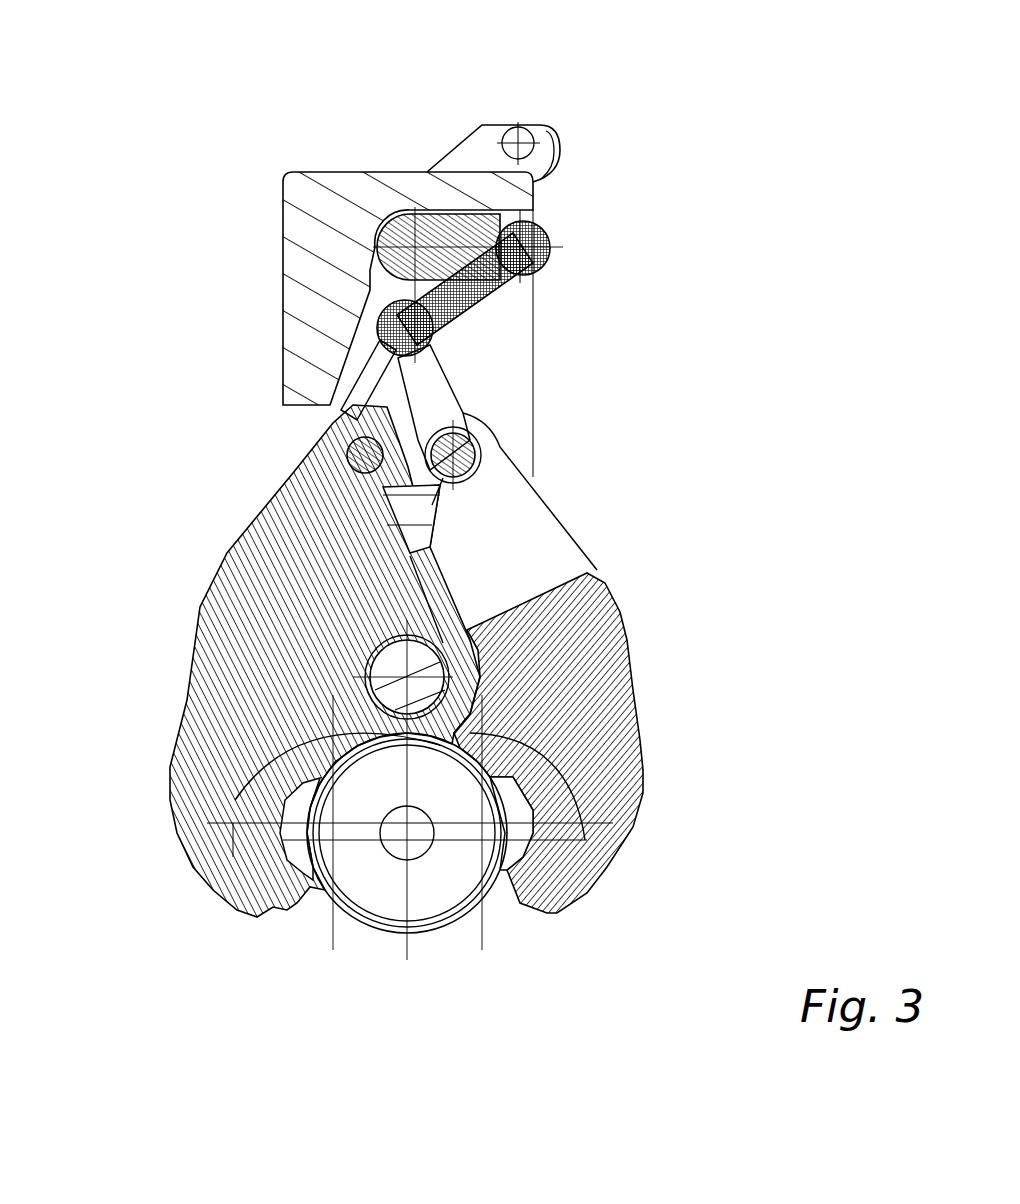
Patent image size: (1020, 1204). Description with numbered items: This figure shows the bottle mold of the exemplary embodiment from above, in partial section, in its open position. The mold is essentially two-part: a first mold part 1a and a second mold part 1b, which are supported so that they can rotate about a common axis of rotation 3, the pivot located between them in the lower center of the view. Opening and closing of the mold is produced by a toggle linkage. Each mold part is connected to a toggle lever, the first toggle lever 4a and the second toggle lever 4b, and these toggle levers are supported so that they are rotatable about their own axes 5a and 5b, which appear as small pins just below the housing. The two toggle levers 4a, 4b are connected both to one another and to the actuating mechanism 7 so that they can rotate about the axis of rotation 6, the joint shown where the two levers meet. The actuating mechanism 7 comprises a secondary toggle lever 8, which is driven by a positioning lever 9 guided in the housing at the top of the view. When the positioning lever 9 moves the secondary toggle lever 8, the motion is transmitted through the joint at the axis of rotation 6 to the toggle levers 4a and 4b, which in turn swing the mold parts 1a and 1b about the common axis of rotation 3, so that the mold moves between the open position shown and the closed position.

The first mold part 1a is at (272, 857).
The second mold part 1b is at (538, 858).
The common axis of rotation 3 is at (400, 675).
The toggle lever 4a is at (375, 393).
The toggle lever 4b is at (430, 398).
The axis 5a is at (365, 455).
The axis 5b is at (433, 455).
The axis of rotation 6 is at (406, 330).
The actuating mechanism 7 is at (560, 232).
The secondary toggle lever 8 is at (458, 293).
The positioning lever 9 is at (465, 247).